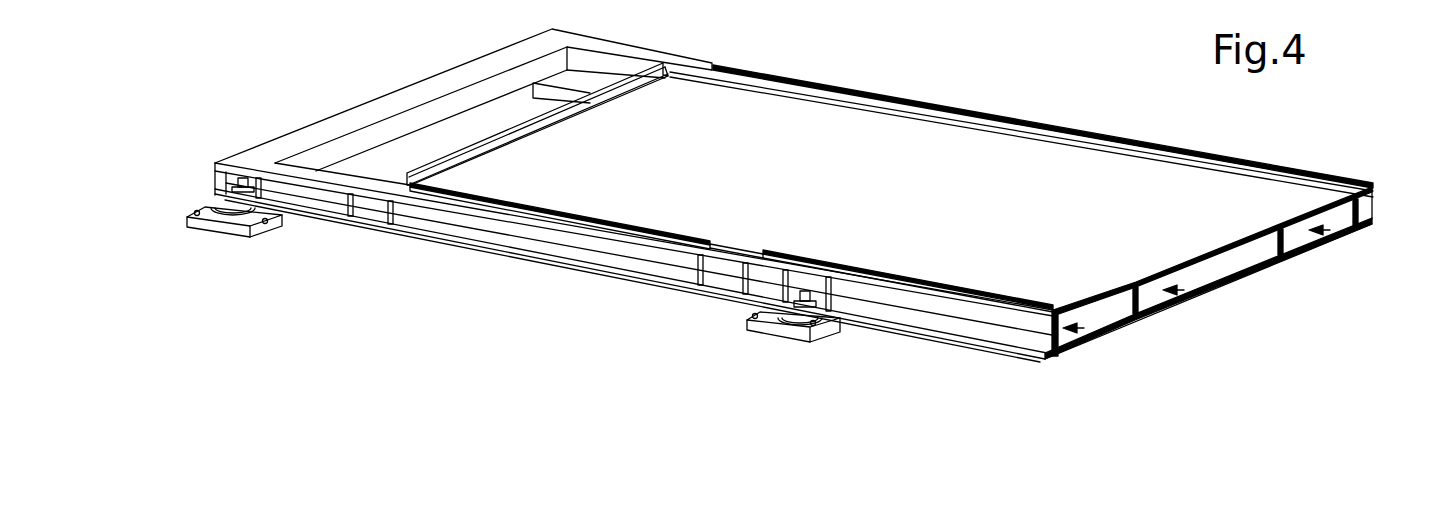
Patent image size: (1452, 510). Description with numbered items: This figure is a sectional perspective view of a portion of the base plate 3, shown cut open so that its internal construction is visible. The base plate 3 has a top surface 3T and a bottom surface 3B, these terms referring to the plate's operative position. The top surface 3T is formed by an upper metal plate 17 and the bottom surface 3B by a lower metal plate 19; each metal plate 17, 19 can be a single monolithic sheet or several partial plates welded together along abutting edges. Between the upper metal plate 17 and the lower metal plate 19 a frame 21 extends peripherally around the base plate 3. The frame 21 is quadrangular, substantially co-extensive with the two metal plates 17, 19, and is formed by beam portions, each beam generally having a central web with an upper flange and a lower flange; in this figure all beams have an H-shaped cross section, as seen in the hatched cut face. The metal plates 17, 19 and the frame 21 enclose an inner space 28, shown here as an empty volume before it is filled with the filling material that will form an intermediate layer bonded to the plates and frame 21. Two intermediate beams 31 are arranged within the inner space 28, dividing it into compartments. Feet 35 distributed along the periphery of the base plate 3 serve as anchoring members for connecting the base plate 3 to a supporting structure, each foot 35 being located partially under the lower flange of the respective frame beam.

The base plate 3 is at (1332, 151).
The top surface 3T is at (803, 104).
The bottom surface 3B is at (1302, 241).
The upper metal plate 17 is at (1025, 181).
The lower metal plate 19 is at (1230, 290).
The frame 21 is at (957, 320).
The inner space 28 is at (1340, 234).
The intermediate beams 31 is at (1268, 245).
The feet 35 is at (217, 225).